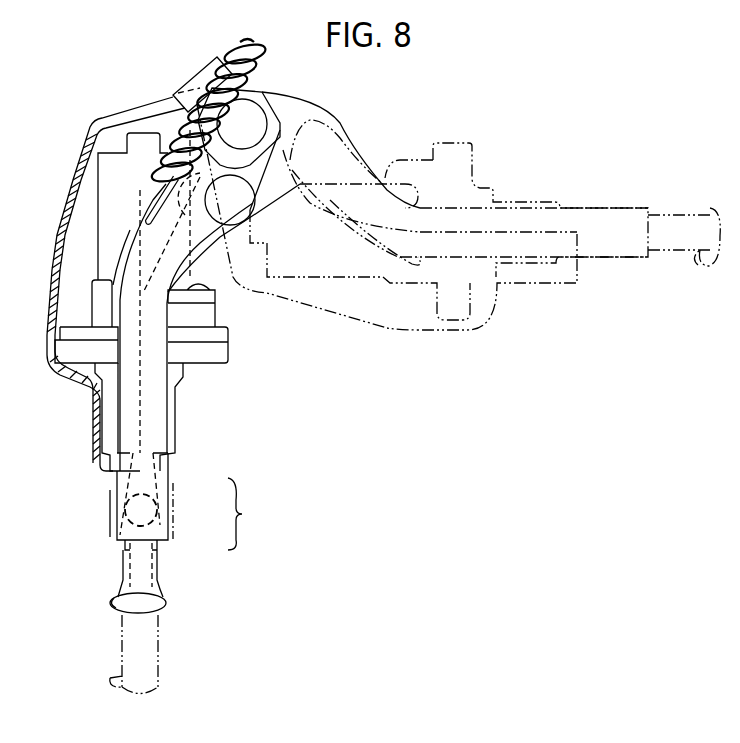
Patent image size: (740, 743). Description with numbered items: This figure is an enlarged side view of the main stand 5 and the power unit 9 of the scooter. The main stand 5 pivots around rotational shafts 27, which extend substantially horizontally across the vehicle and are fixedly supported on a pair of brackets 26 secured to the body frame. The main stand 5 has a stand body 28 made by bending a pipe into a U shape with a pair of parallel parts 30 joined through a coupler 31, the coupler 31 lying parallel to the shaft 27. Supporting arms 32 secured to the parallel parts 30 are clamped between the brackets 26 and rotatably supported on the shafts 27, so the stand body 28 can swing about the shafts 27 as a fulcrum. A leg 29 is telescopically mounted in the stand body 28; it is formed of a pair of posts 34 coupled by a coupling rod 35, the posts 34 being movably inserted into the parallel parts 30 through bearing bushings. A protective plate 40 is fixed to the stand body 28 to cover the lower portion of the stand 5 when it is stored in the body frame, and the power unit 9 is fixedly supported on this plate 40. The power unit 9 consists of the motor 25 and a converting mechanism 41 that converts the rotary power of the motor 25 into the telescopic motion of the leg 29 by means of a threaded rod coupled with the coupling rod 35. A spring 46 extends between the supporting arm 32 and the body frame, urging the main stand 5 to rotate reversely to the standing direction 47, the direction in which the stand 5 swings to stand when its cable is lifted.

The main stand 5 is at (184, 586).
The power unit 9 is at (230, 304).
The motor 25 is at (102, 225).
The brackets 26 is at (196, 84).
The rotational shafts 27 is at (249, 120).
The stand body 28 is at (170, 485).
The leg 29 is at (162, 566).
The parallel parts 30 is at (160, 430).
The coupler 31 is at (268, 207).
The supporting arms 32 is at (125, 253).
The posts 34 is at (123, 557).
The coupling rod 35 is at (125, 523).
The protective plate 40 is at (58, 265).
The converting mechanism 41 is at (65, 353).
The spring 46 is at (185, 132).
The standing direction 47 is at (248, 383).